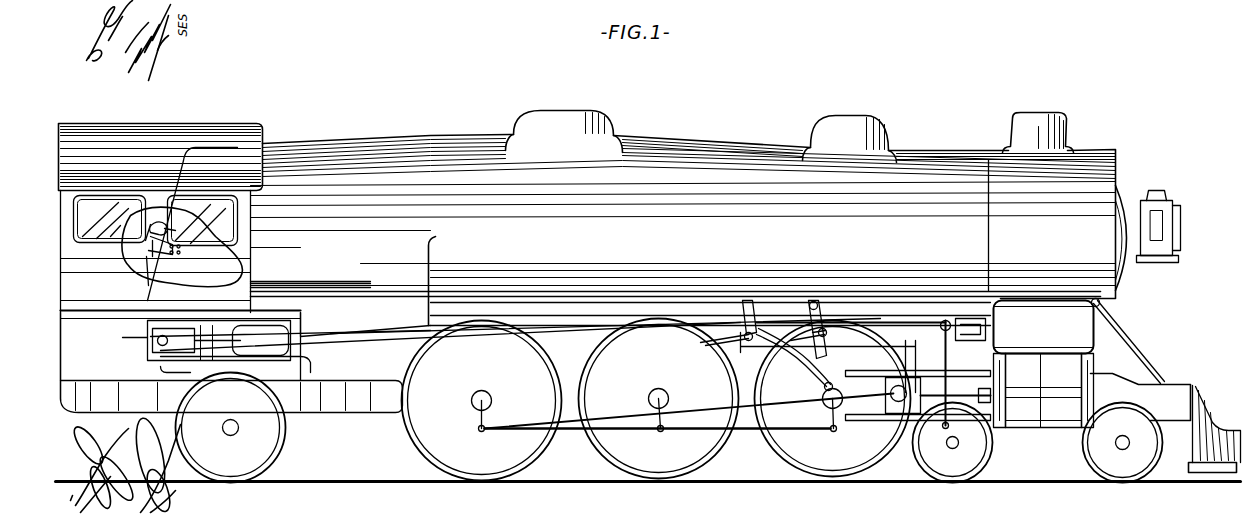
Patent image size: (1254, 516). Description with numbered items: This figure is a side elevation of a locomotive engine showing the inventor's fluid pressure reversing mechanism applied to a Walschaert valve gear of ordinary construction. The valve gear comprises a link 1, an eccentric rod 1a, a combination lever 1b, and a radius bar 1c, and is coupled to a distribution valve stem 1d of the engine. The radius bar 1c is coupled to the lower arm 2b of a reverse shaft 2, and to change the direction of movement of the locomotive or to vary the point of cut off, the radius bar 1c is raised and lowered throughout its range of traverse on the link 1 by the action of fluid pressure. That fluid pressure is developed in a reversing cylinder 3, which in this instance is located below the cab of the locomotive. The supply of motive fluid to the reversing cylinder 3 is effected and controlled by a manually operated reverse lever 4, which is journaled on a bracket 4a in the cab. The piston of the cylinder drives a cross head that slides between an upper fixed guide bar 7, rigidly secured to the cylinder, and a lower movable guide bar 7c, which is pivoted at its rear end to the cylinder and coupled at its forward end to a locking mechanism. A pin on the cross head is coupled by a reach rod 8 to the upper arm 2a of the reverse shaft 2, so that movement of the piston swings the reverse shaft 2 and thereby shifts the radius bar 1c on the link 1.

The link 1 is at (828, 300).
The eccentric rod 1a is at (668, 396).
The combination lever 1b is at (953, 418).
The radius bar 1c is at (892, 322).
The distribution valve stem 1d is at (1050, 348).
The reverse shaft 2 is at (742, 336).
The upper arm of reverse shaft 2a is at (750, 300).
The lower arm of reverse shaft 2b is at (772, 344).
The reversing cylinder 3 is at (173, 340).
The reverse lever 4 is at (168, 218).
The bracket 4a is at (170, 272).
The upper fixed guide bar 7 is at (268, 338).
The lower movable guide bar 7c is at (268, 356).
The reach rod 8 is at (395, 334).